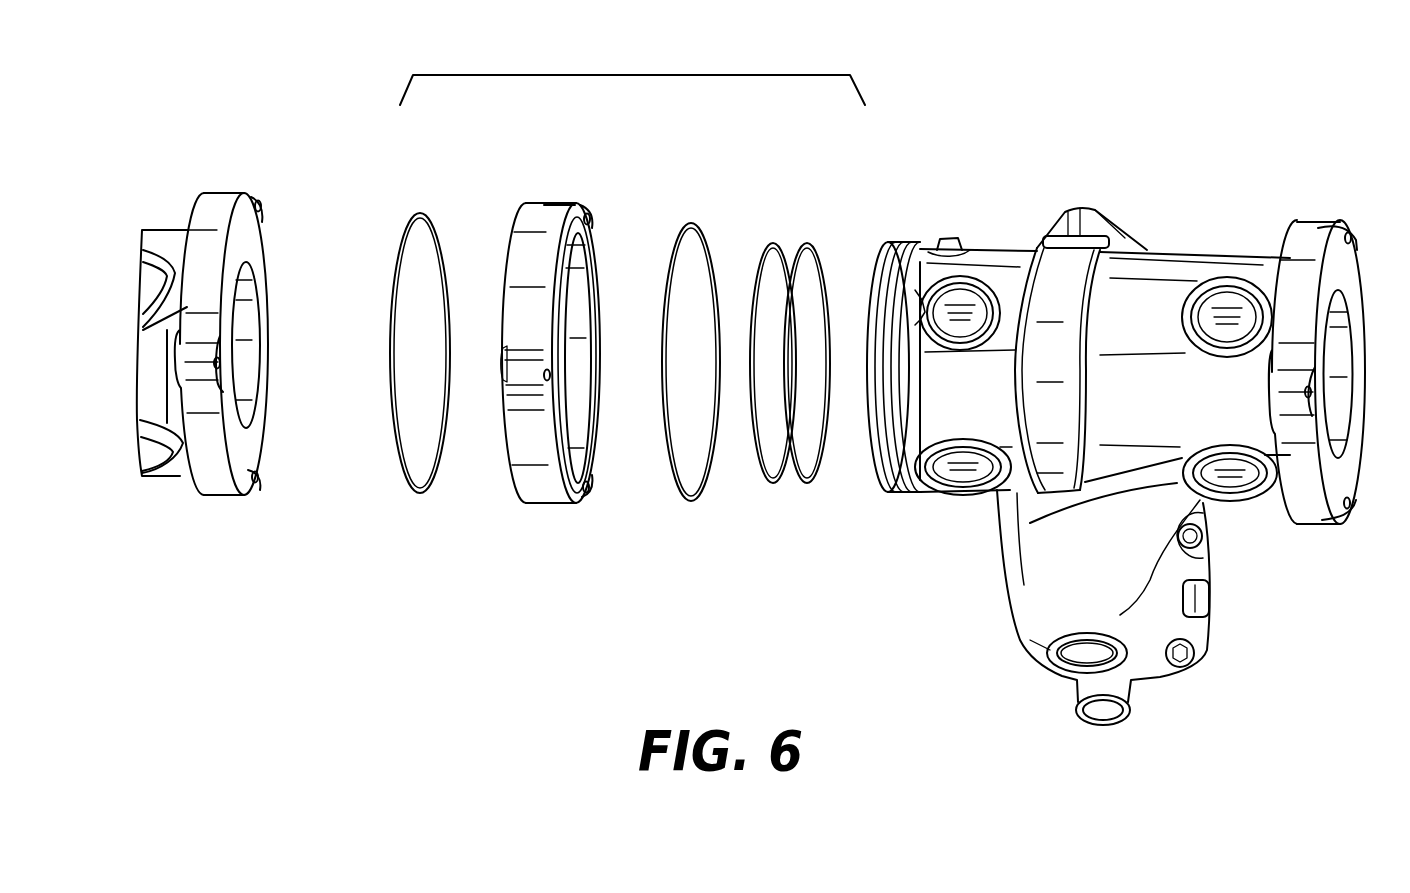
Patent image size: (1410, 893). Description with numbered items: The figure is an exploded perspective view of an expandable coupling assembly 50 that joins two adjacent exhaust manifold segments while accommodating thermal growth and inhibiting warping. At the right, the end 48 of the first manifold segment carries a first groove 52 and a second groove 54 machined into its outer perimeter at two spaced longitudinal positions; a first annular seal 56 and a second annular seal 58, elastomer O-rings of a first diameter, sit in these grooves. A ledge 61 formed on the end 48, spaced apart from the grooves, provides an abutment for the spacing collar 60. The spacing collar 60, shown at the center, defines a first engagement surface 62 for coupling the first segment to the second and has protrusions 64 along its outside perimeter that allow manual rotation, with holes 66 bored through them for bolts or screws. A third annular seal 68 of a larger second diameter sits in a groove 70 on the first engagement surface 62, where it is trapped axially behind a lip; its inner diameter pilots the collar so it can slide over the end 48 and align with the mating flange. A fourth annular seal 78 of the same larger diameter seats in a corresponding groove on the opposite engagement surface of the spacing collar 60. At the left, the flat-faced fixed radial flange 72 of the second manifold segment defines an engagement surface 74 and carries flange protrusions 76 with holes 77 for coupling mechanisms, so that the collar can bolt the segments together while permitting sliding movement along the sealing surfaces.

The end of exhaust manifold segment 48 is at (1095, 441).
The expandable coupling assembly 50 is at (600, 75).
The first groove 52 is at (930, 245).
The second groove 54 is at (900, 242).
The first annular seal 56 is at (810, 242).
The second annular seal 58 is at (772, 242).
The spacing collar 60 is at (571, 356).
The ledge 61 is at (960, 243).
The first engagement surface 62 is at (596, 246).
The protrusion 64 is at (570, 205).
The hole 66 is at (592, 216).
The third annular seal 68 is at (686, 222).
The groove 70 is at (598, 300).
The fixed radial flange 72 is at (234, 317).
The engagement surface 74 is at (255, 236).
The flange protrusion 76 is at (260, 205).
The hole 77 is at (258, 220).
The fourth annular seal 78 is at (418, 212).